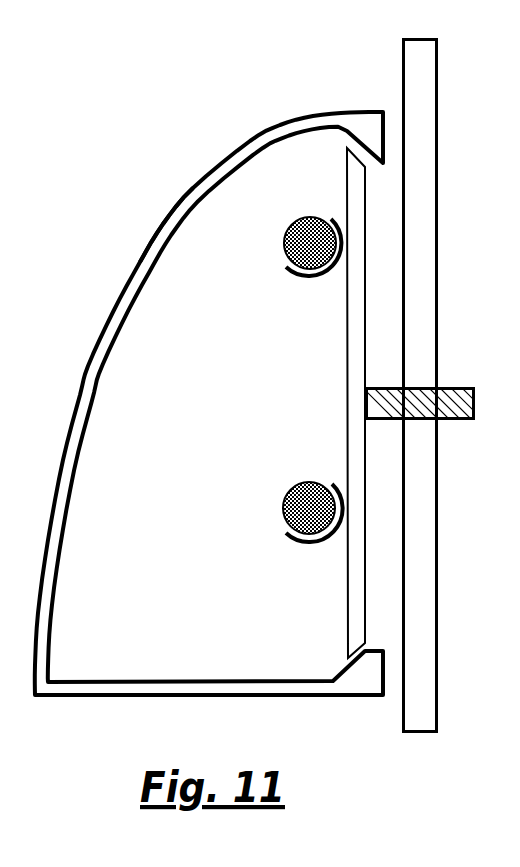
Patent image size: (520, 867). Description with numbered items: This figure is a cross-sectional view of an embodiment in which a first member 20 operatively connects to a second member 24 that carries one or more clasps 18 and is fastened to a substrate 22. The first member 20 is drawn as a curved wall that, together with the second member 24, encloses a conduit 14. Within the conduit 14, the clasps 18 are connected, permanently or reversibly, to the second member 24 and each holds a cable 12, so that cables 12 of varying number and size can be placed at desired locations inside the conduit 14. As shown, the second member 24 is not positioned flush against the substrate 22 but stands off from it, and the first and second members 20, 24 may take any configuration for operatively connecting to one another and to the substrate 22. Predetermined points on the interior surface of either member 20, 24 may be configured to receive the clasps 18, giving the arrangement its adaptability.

The cable 12 is at (309, 375).
The conduit 14 is at (209, 403).
The clasp 18 is at (316, 281).
The first member 20 is at (140, 266).
The substrate 22 is at (418, 98).
The second member 24 is at (360, 318).